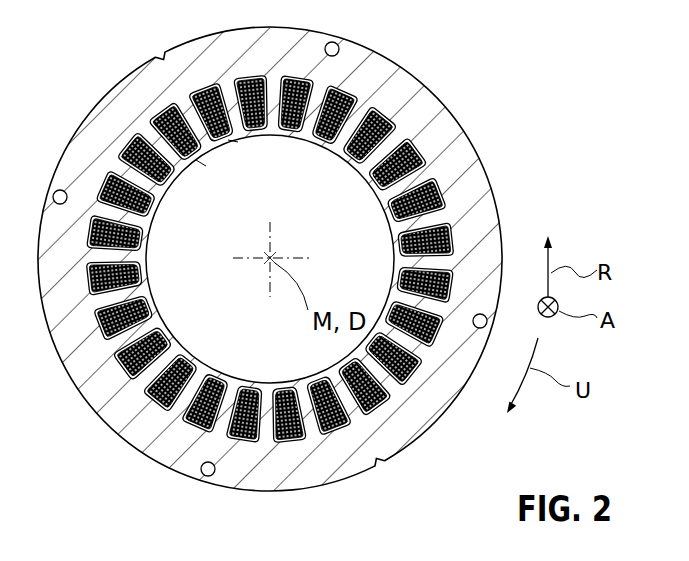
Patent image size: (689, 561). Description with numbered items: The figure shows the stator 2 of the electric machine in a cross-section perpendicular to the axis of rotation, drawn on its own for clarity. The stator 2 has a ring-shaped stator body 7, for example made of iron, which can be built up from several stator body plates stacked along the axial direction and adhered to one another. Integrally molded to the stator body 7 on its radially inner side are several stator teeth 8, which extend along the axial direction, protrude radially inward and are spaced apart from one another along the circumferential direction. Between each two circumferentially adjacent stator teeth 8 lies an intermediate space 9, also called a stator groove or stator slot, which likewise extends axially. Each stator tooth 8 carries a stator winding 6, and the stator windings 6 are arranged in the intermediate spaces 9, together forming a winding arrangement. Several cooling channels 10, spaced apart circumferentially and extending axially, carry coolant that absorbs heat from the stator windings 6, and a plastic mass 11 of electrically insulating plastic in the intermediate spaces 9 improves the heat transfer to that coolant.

The stator 2 is at (545, 112).
The stator winding 6 is at (162, 61).
The stator body 7 is at (432, 58).
The stator tooth 8 is at (247, 137).
The intermediate space 9 is at (233, 141).
The cooling channel 10 is at (205, 84).
The plastic mass 11 is at (200, 168).